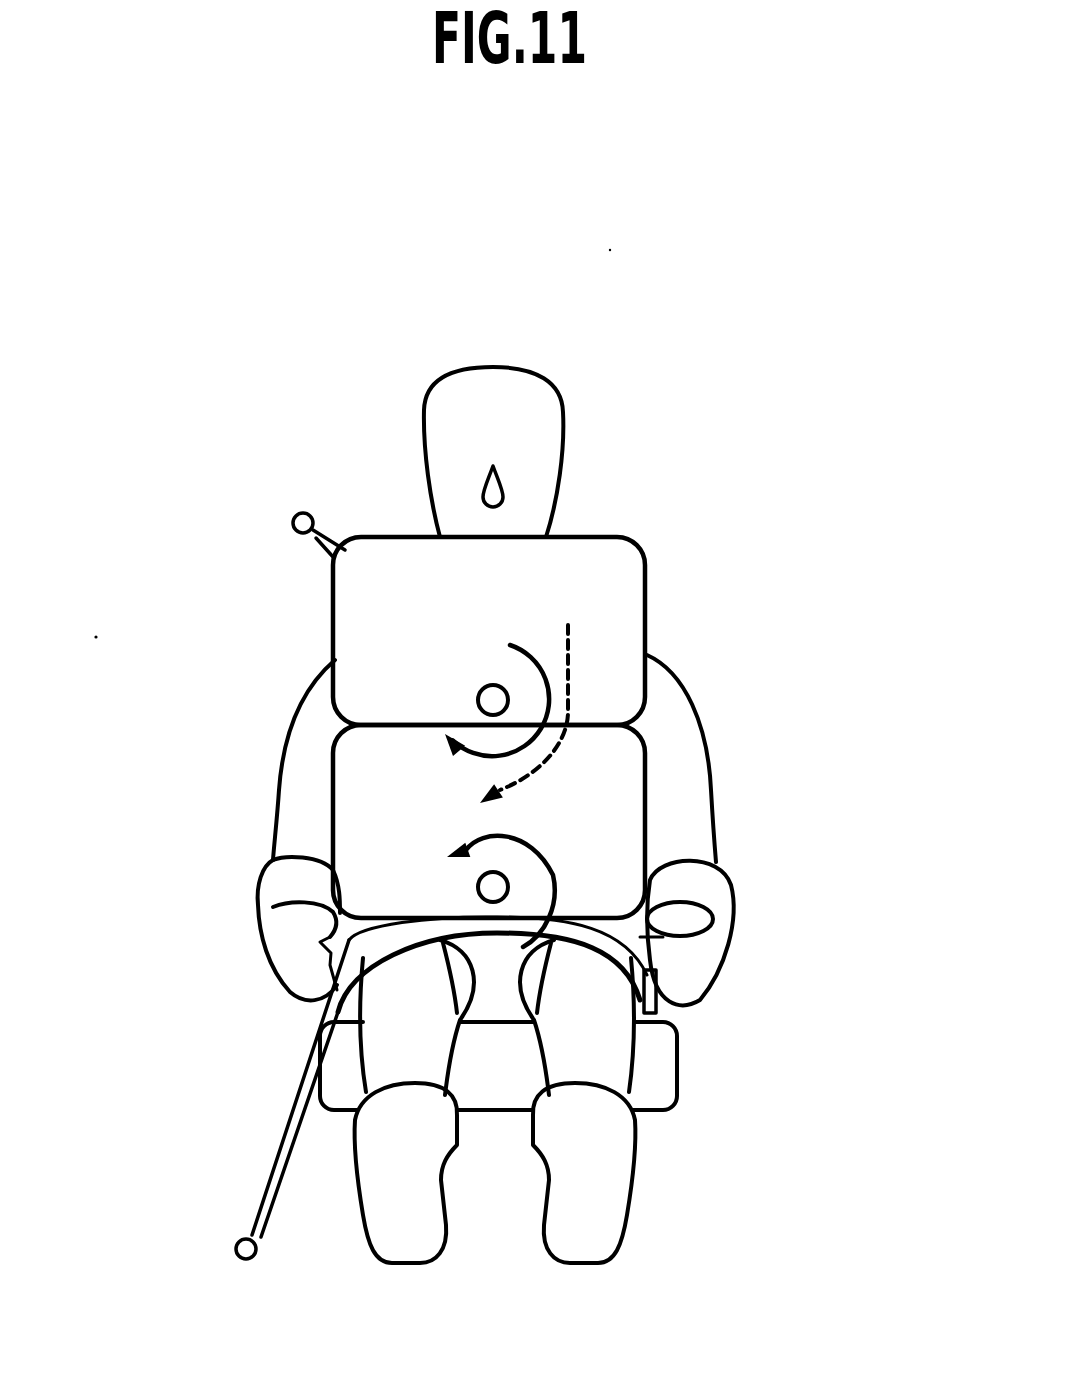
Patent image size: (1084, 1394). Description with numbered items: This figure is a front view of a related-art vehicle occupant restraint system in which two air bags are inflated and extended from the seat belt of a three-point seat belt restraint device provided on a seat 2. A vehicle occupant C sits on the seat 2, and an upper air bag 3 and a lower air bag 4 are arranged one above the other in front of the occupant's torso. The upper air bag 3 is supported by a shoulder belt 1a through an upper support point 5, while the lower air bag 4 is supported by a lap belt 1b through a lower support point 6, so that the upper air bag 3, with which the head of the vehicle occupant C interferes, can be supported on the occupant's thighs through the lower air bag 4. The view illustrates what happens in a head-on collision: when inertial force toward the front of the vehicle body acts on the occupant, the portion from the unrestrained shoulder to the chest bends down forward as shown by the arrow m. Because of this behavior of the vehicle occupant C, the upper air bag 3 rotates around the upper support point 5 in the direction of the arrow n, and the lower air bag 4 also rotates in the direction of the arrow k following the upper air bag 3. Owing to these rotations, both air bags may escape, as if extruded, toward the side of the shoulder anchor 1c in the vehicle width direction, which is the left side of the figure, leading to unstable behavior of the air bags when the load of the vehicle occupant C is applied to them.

The vehicle occupant C is at (580, 396).
The upper air bag 3 is at (414, 575).
The lower air bag 4 is at (365, 872).
The upper support point 5 is at (490, 700).
The lower support point 6 is at (490, 887).
The arrow n is at (550, 693).
The arrow k is at (560, 862).
The arrow m is at (570, 643).
The shoulder anchor 1c is at (293, 522).
The shoulder belt 1a is at (645, 907).
The lap belt 1b is at (660, 1018).
The seat 2 is at (705, 1063).